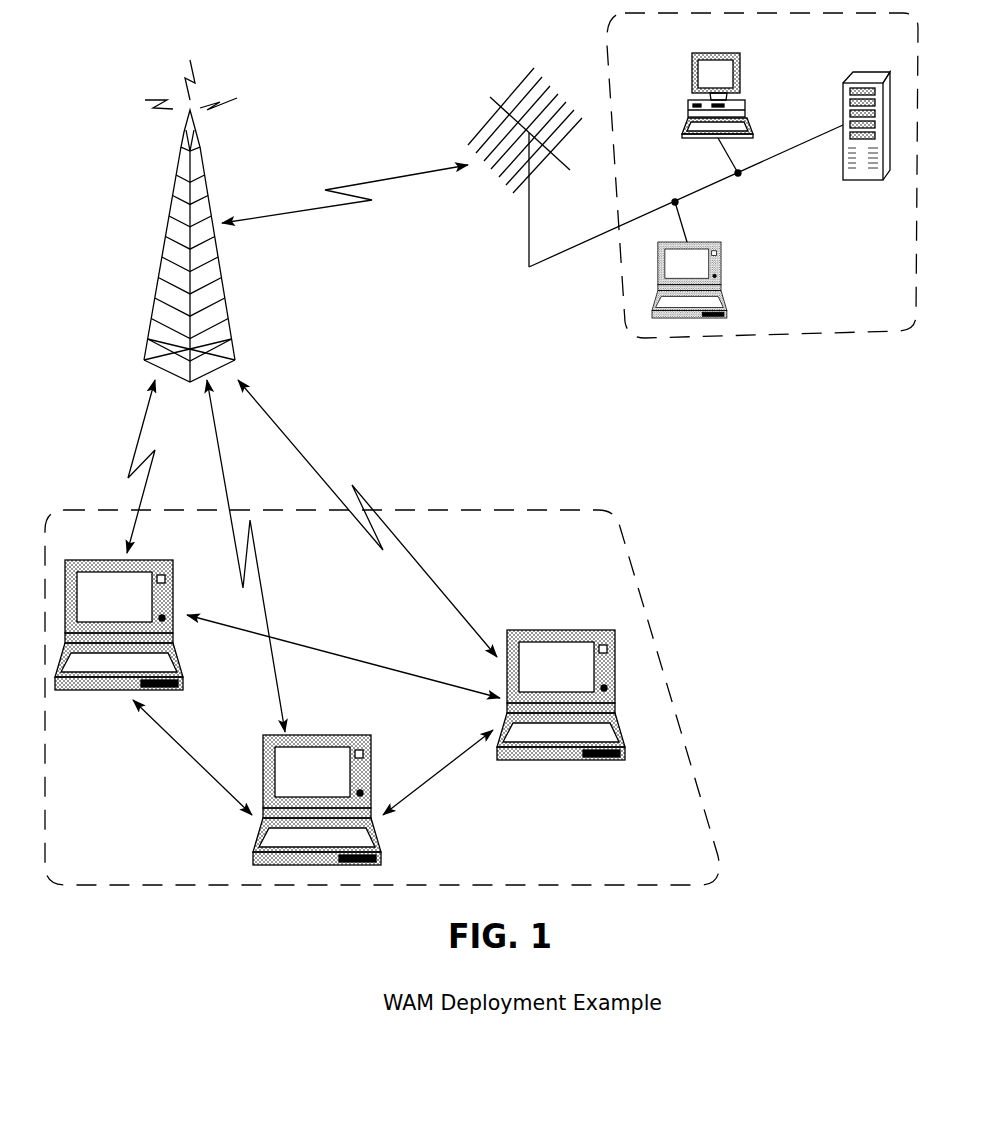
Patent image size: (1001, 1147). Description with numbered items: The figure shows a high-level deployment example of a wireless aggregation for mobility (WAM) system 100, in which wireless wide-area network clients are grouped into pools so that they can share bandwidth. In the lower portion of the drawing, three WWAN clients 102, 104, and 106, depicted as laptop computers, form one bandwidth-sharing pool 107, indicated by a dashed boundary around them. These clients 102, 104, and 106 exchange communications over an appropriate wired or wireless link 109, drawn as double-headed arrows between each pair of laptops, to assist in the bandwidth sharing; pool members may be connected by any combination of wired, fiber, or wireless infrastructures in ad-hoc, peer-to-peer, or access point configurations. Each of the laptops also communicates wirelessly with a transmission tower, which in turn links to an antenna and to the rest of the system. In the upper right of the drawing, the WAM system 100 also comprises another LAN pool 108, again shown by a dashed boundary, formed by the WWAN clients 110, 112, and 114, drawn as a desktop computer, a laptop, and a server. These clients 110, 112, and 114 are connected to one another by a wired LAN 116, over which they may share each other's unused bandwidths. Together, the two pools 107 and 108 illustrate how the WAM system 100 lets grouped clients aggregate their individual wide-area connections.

The wireless aggregation for mobility (WAM) system 100 is at (486, 453).
The WWAN client 102 is at (317, 790).
The WWAN client 104 is at (561, 684).
The WWAN client 106 is at (119, 614).
The bandwidth-sharing pool 107 is at (422, 702).
The LAN pool 108 is at (723, 199).
The wired or wireless link 109 is at (327, 648).
The WWAN client 110 is at (717, 103).
The WWAN client 112 is at (689, 260).
The WWAN client 114 is at (867, 115).
The wired LAN 116 is at (763, 163).